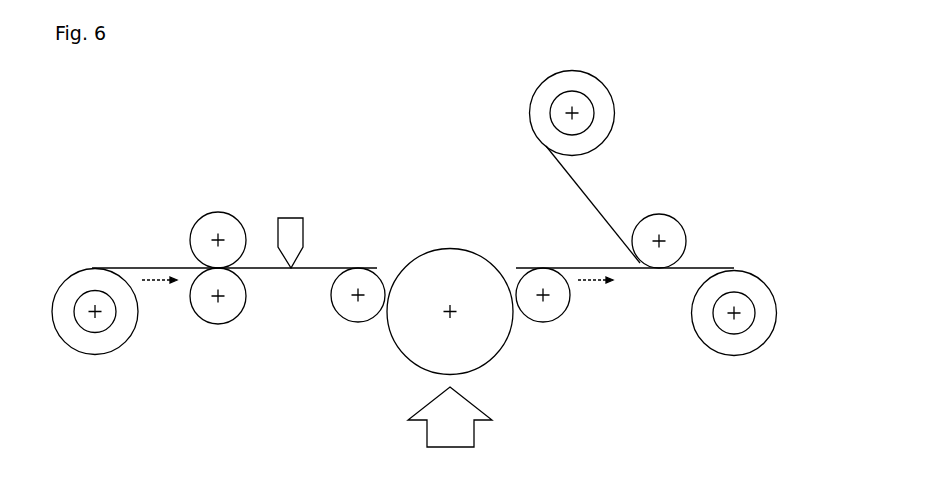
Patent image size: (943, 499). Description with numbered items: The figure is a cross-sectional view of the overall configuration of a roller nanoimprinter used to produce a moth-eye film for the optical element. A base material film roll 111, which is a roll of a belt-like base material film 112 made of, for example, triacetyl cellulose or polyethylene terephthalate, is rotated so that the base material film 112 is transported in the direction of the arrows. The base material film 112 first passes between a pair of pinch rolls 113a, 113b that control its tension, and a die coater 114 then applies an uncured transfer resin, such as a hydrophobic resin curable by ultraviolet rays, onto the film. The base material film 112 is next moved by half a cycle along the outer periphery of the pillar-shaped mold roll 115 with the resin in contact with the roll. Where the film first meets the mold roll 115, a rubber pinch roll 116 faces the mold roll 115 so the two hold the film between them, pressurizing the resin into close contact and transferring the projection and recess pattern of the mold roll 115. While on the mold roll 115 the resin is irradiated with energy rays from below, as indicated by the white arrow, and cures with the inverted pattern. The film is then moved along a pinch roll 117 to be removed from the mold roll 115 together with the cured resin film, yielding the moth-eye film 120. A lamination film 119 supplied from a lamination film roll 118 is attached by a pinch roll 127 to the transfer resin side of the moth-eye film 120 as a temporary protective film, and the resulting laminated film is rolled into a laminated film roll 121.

The base material film roll 111 is at (93, 347).
The base material film 112 is at (145, 268).
The pinch roll 113a is at (215, 222).
The pinch roll 113b is at (218, 317).
The die coater 114 is at (290, 225).
The mold roll 115 is at (452, 257).
The pinch roll 116 is at (362, 317).
The pinch roll 117 is at (543, 320).
The lamination film roll 118 is at (613, 110).
The lamination film 119 is at (582, 187).
The moth-eye film 120 is at (588, 268).
The laminated film roll 121 is at (733, 347).
The pinch roll 127 is at (680, 232).